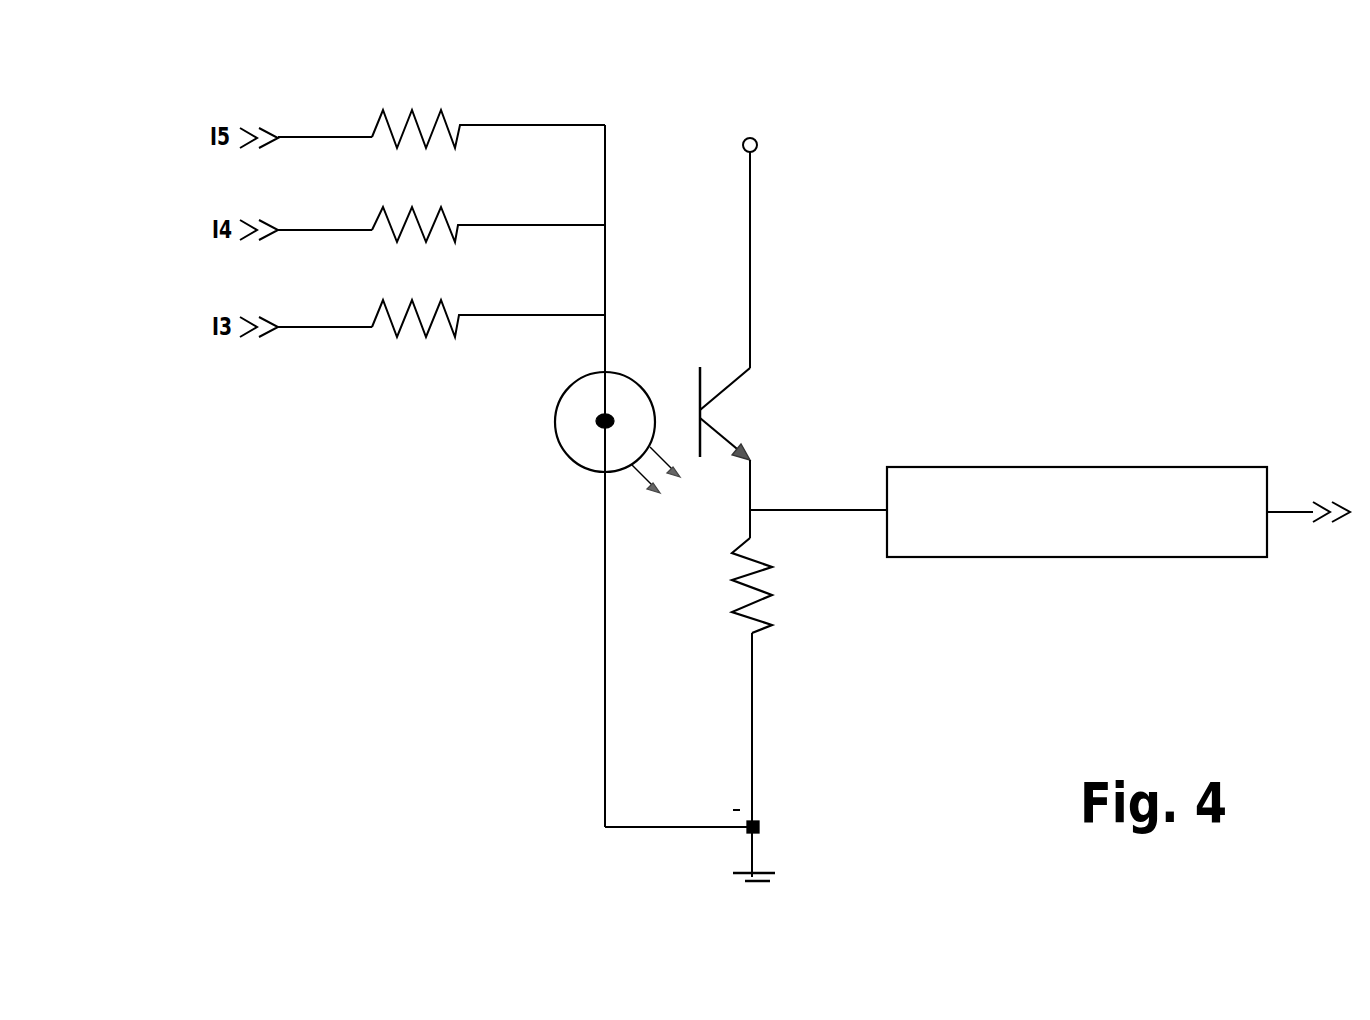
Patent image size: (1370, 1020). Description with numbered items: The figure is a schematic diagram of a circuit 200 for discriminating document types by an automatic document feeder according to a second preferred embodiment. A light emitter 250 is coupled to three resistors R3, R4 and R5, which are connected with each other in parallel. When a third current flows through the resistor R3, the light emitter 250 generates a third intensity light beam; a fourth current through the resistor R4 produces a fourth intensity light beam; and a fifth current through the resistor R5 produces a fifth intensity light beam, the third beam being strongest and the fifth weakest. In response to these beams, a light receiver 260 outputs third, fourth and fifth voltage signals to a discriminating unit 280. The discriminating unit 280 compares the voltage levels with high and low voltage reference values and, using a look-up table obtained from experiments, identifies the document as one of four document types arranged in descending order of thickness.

The circuit for discriminating document types 200 is at (1097, 123).
The light emitter 250 is at (567, 428).
The light receiver 260 is at (735, 408).
The discriminating unit 280 is at (1003, 478).
The resistor R3 is at (488, 301).
The resistor R4 is at (488, 205).
The resistor R5 is at (488, 110).